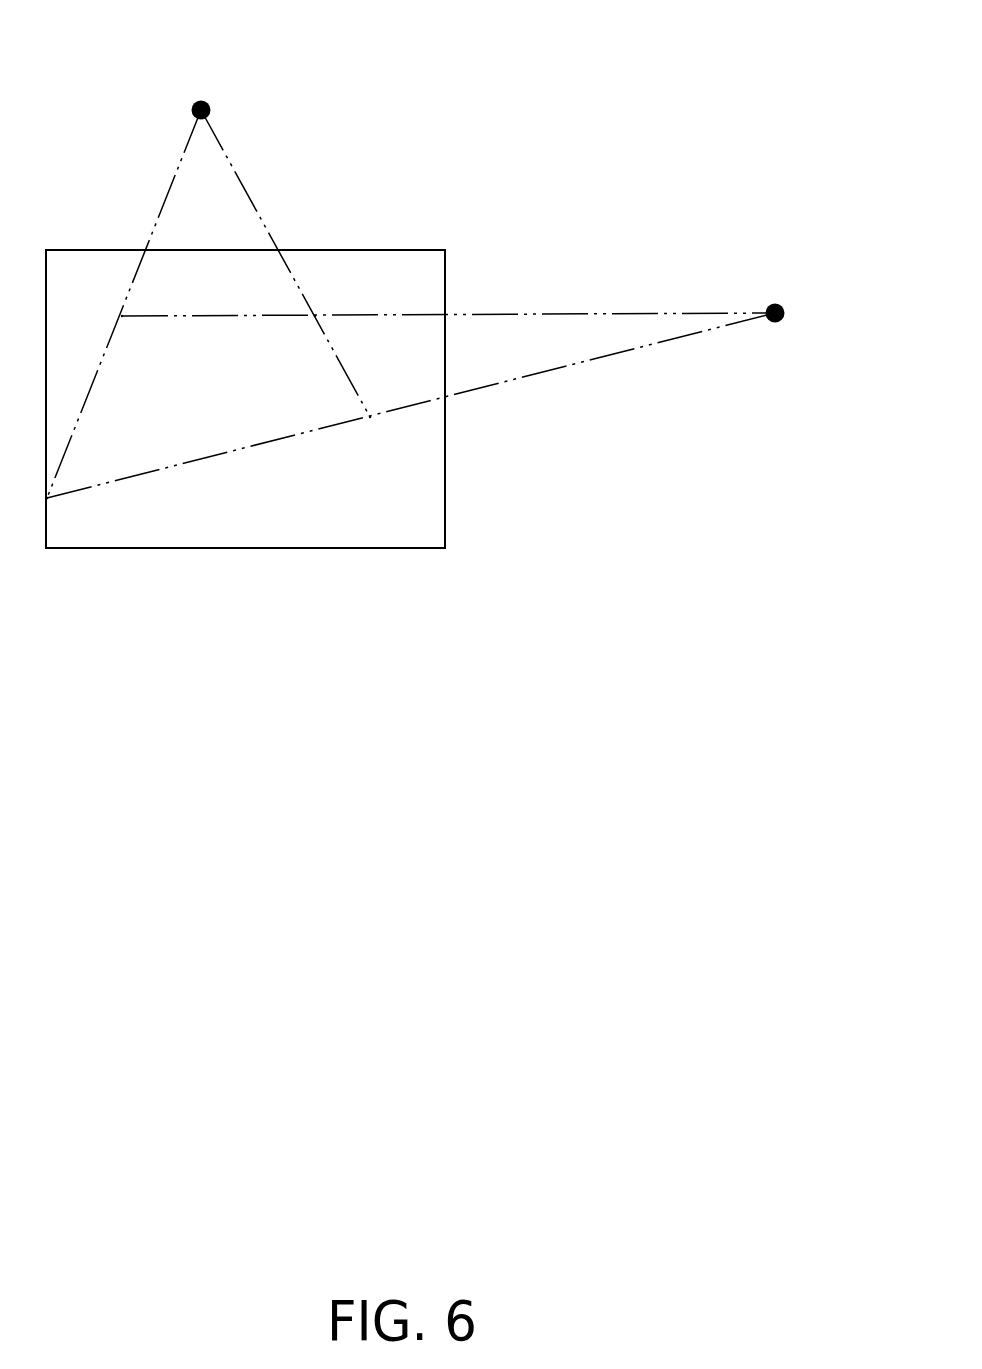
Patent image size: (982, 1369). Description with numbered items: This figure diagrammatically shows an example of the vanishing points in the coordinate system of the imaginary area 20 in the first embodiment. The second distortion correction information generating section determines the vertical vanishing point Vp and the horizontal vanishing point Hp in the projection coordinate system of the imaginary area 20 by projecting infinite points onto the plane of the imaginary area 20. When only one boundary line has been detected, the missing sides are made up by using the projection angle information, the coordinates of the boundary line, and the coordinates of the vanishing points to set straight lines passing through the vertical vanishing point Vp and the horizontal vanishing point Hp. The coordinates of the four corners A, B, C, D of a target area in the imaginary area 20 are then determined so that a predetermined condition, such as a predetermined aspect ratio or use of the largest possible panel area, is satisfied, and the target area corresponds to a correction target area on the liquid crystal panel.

The imaginary area 20 is at (395, 250).
The vertical vanishing point Vp is at (210, 100).
The horizontal vanishing point Hp is at (786, 310).
The corner of target area A is at (107, 300).
The corner of target area B is at (325, 297).
The corner of target area C is at (379, 433).
The corner of target area D is at (62, 514).